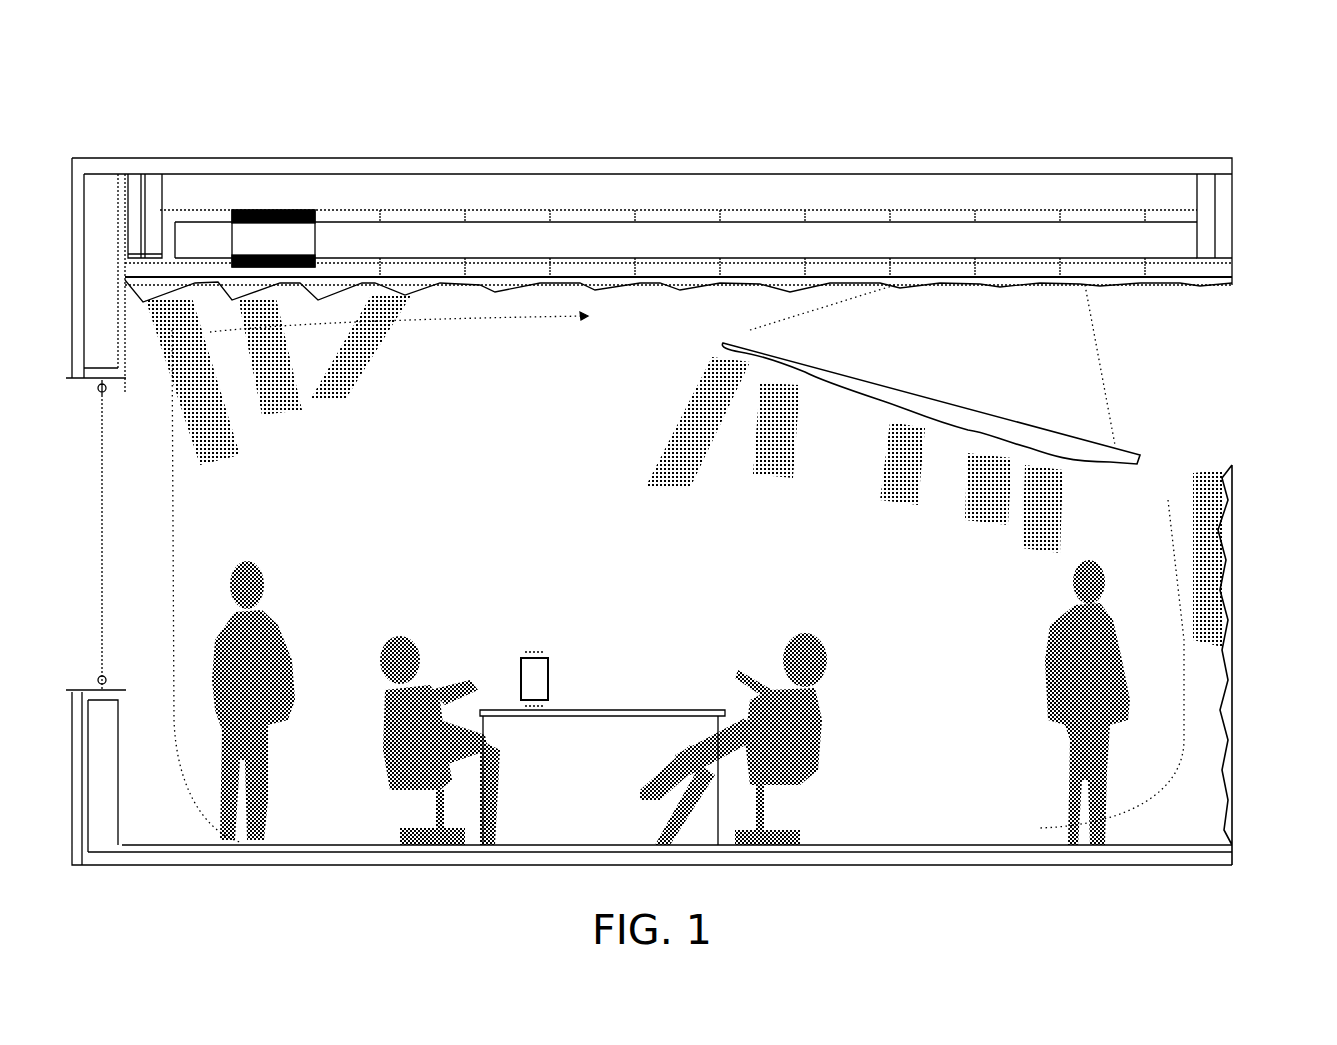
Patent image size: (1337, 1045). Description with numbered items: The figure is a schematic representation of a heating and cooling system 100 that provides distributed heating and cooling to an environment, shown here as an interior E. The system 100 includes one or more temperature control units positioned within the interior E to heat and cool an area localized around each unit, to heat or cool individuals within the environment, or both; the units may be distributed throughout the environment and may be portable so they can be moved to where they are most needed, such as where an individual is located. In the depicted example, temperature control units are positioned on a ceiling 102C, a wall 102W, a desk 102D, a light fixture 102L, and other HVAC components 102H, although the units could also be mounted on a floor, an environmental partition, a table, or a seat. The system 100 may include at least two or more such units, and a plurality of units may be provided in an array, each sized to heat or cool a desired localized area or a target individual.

The system 100 is at (177, 90).
The other HVAC components 102H is at (275, 202).
The ceiling 102C is at (332, 287).
The desk 102D is at (535, 648).
The light fixture 102L is at (778, 342).
The wall 102W is at (1197, 500).
The interior E is at (1162, 382).